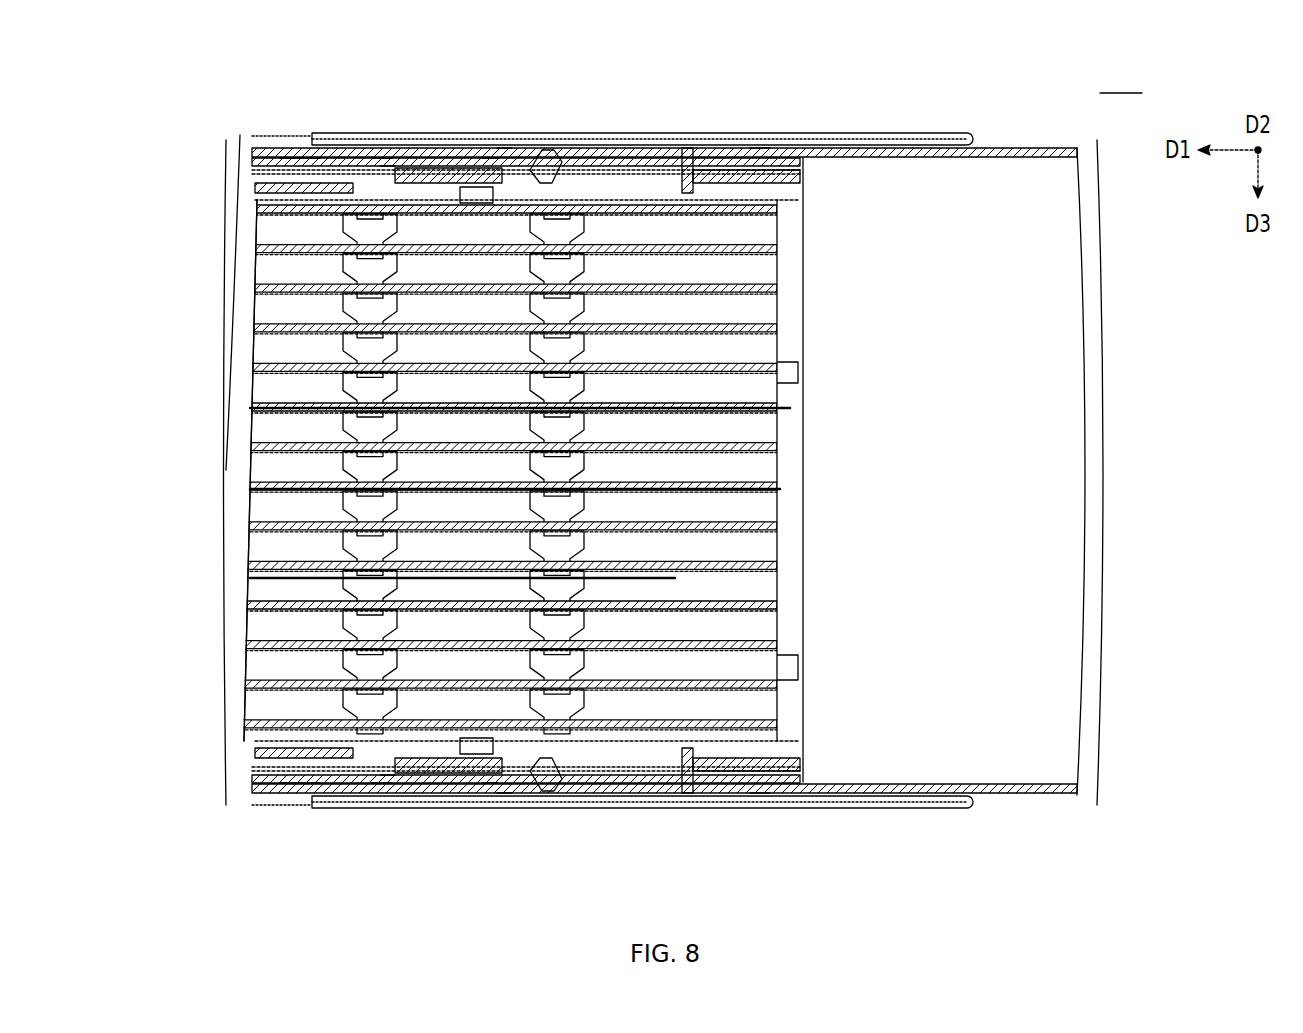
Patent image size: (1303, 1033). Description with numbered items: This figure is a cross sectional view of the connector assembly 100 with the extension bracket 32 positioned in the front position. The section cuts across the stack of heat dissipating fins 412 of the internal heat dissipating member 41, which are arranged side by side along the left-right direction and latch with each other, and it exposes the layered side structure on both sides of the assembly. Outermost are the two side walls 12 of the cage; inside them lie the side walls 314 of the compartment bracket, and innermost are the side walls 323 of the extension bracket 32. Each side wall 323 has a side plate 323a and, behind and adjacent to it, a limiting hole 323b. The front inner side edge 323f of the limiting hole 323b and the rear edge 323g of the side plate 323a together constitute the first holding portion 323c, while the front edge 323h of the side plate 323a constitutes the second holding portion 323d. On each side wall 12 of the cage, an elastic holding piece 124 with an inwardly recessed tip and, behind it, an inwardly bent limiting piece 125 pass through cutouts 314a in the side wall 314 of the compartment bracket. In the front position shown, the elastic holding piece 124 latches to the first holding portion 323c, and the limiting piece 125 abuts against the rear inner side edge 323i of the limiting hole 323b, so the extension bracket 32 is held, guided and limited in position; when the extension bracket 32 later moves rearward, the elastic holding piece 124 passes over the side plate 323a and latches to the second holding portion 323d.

The connector assembly 100 is at (1121, 80).
The side wall 12 is at (806, 140).
The elastic holding piece 124 is at (540, 170).
The limiting piece 125 is at (656, 185).
The extension bracket 32 is at (808, 266).
The side wall 314 is at (438, 170).
The cutout 314a is at (470, 175).
The side wall 323 is at (803, 177).
The side plate 323a is at (430, 196).
The limiting hole 323b is at (618, 178).
The first holding portion 323c is at (568, 170).
The second holding portion 323d is at (392, 183).
The front inner side edge 323f is at (497, 185).
The rear edge 323g is at (490, 180).
The front edge 323h is at (387, 172).
The rear inner side edge 323i is at (758, 160).
The heat dissipating fin 412 is at (280, 278).
The internal heat dissipating member 41 is at (250, 470).